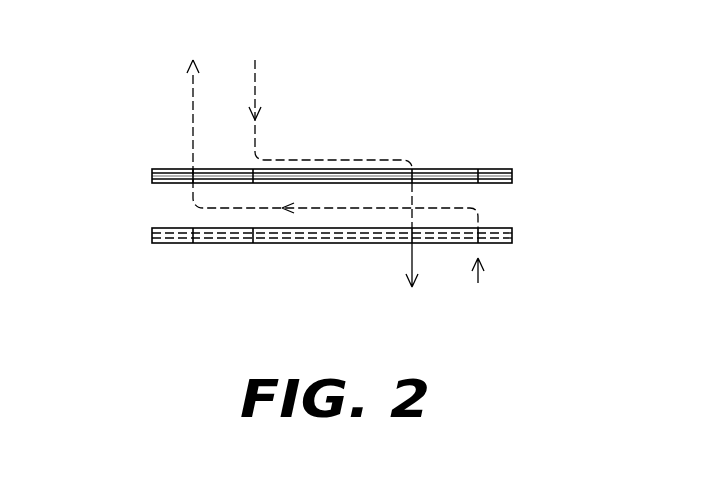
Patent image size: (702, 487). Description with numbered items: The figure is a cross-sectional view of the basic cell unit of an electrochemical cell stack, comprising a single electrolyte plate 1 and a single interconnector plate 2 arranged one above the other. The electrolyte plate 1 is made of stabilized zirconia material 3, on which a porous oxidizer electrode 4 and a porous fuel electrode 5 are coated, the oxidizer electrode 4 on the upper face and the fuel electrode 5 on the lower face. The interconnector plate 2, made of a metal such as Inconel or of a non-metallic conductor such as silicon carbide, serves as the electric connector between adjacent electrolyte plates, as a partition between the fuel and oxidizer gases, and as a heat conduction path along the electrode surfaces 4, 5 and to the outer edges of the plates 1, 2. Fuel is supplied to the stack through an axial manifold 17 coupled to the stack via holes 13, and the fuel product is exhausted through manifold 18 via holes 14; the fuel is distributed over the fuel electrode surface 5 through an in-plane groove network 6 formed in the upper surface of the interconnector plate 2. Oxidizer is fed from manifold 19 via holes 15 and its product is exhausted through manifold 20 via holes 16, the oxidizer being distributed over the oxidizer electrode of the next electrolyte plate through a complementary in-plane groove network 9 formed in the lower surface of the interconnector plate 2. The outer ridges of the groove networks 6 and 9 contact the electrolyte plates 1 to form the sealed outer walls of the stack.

The electrolyte plate 1 is at (514, 174).
The interconnector plate 2 is at (514, 238).
The stabilized zirconia material 3 is at (152, 174).
The porous oxidizer electrode 4 is at (164, 168).
The porous fuel electrode 5 is at (160, 182).
The in-plane groove network 6 is at (165, 228).
The complementary in-plane groove network 9 is at (166, 243).
The holes 13 is at (478, 168).
The holes 14 is at (193, 168).
The holes 15 is at (256, 168).
The holes 16 is at (412, 168).
The manifold 17 is at (475, 306).
The manifold 18 is at (300, 126).
The manifold 19 is at (327, 91).
The manifold 20 is at (379, 268).